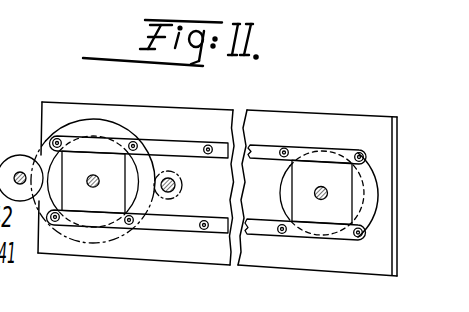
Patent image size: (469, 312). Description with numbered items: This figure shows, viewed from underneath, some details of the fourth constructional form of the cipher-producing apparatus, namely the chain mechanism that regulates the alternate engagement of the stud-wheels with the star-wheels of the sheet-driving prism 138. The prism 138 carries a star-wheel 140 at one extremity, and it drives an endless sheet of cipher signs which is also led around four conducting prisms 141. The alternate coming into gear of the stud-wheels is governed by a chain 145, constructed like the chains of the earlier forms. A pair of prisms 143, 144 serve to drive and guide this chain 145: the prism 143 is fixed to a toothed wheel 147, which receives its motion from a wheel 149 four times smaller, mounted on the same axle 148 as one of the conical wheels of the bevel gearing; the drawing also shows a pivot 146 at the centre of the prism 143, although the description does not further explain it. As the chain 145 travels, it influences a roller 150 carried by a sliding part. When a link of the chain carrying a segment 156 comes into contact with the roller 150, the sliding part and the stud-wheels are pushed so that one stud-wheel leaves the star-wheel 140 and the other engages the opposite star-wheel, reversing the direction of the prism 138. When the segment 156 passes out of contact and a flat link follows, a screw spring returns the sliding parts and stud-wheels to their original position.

The prism 138 is at (10, 99).
The star-wheel 140 is at (12, 67).
The conducting prism 141 is at (13, 31).
The prism 143 is at (87, 200).
The prism 144 is at (307, 173).
The chain 145 is at (185, 145).
The pivot pin 146 is at (96, 175).
The toothed wheel 147 is at (118, 241).
The axle 148 is at (180, 179).
The wheel 149 is at (172, 200).
The roller 150 is at (19, 156).
The segment 156 is at (80, 130).